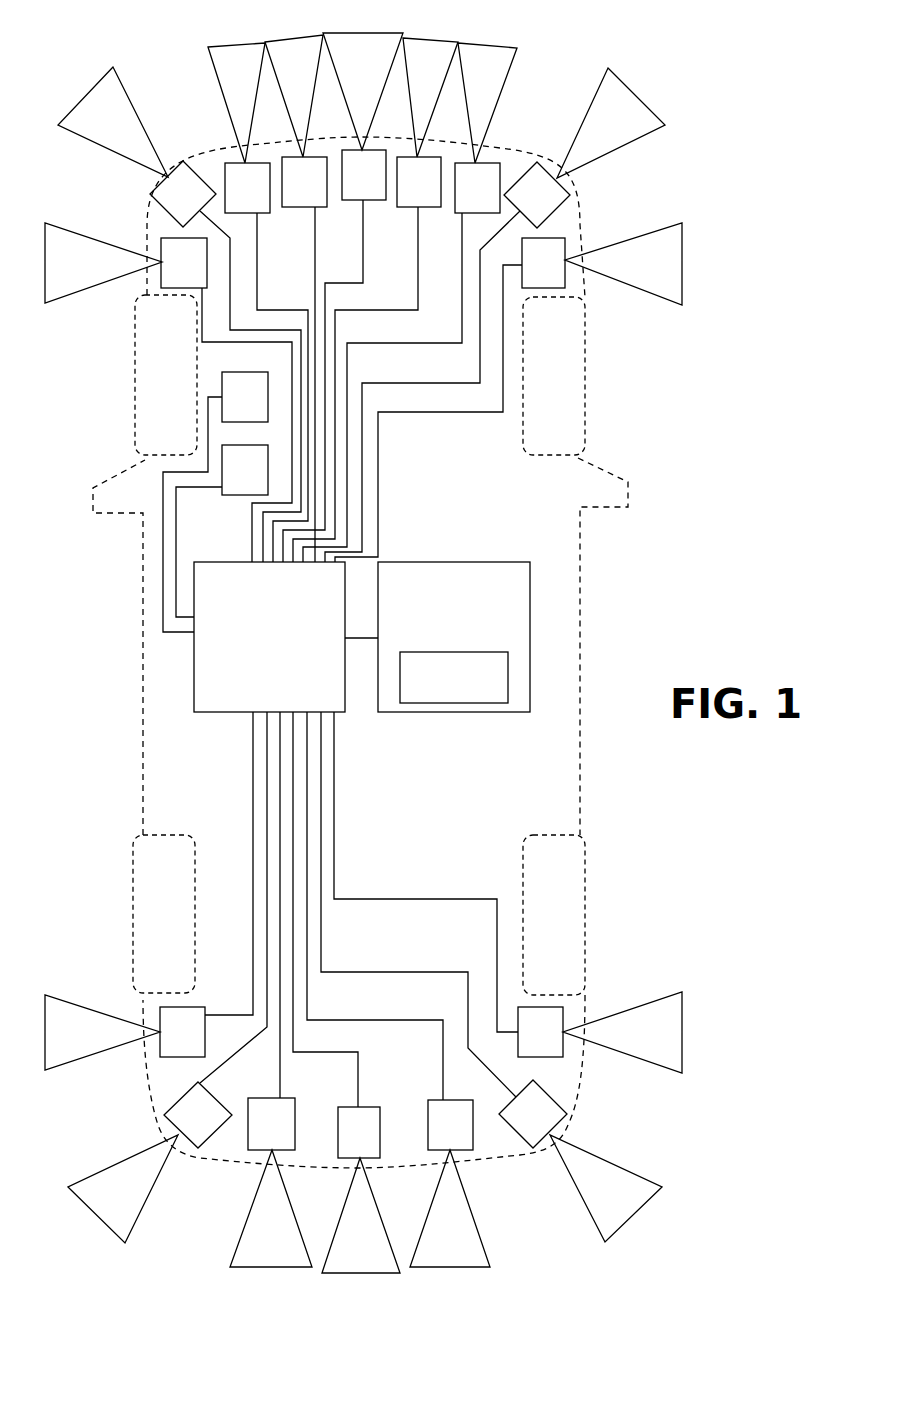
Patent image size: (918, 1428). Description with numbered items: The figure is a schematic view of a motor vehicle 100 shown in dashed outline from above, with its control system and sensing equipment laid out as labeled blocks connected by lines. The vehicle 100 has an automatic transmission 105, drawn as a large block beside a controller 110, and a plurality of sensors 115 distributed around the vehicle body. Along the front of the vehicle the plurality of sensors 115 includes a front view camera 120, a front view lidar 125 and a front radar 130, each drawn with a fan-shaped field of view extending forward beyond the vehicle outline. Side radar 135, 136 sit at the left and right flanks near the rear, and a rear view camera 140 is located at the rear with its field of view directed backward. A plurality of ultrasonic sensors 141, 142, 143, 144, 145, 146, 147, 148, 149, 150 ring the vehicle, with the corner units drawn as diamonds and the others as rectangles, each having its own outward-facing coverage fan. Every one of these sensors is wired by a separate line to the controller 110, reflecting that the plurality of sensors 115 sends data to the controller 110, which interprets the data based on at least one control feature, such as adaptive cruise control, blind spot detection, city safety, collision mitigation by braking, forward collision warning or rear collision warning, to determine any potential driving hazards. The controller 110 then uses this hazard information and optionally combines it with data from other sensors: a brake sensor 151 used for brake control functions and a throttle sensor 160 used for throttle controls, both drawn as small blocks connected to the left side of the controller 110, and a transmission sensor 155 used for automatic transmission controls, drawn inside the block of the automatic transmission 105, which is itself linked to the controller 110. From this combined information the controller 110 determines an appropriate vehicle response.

The motor vehicle 100 is at (147, 202).
The plurality of sensors 115 is at (700, 154).
The automatic transmission 105 is at (436, 621).
The controller 110 is at (253, 646).
The front view camera 120 is at (287, 193).
The front view lidar 125 is at (347, 186).
The front radar 130 is at (402, 193).
The side radar 135 is at (165, 1043).
The side radar 136 is at (523, 1043).
The rear view camera 140 is at (342, 1144).
The ultrasonic sensor 141 is at (167, 274).
The ultrasonic sensor 142 is at (166, 205).
The ultrasonic sensor 143 is at (230, 199).
The ultrasonic sensor 144 is at (460, 199).
The ultrasonic sensor 145 is at (520, 206).
The ultrasonic sensor 146 is at (526, 274).
The ultrasonic sensor 147 is at (181, 1126).
The ultrasonic sensor 148 is at (254, 1135).
The ultrasonic sensor 149 is at (433, 1136).
The ultrasonic sensor 150 is at (516, 1125).
The brake sensor 151 is at (228, 408).
The transmission sensor 155 is at (436, 688).
The throttle sensor 160 is at (228, 481).